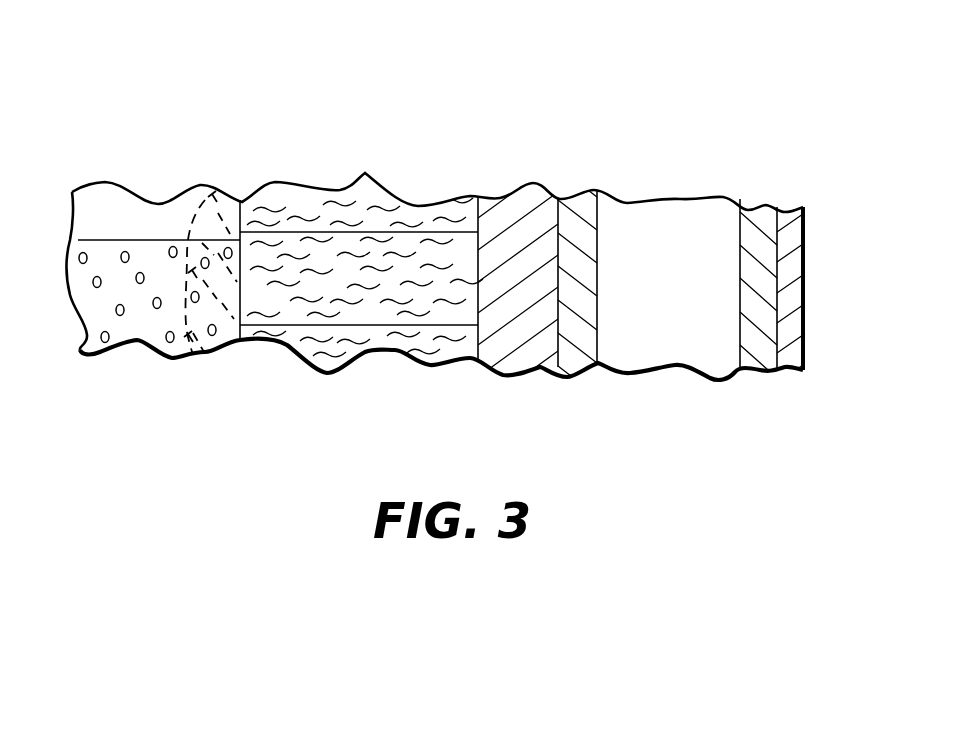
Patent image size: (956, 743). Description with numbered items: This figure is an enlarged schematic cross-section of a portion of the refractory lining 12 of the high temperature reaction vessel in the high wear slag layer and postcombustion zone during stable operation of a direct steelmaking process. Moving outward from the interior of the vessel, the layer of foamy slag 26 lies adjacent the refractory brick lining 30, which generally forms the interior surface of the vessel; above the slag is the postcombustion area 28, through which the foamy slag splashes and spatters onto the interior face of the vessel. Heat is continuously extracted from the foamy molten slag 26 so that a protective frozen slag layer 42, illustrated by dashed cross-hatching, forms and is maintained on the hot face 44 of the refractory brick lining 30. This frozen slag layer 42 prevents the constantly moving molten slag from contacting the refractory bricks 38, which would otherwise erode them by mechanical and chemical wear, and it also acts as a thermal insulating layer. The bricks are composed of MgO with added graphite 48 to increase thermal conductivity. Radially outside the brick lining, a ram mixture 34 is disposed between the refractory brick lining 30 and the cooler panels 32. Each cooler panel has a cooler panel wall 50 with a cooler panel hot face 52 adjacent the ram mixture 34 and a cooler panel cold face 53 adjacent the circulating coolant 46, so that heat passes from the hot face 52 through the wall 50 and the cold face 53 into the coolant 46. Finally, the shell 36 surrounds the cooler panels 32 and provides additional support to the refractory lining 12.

The refractory lining 12 is at (563, 128).
The foamy slag 26 is at (140, 317).
The postcombustion area 28 is at (115, 222).
The refractory brick lining 30 is at (283, 190).
The cooler panels 32 is at (752, 340).
The ram mixture 34 is at (528, 335).
The shell 36 is at (787, 265).
The refractory bricks 38 is at (373, 313).
The frozen slag layer 42 is at (230, 315).
The hot face 44 is at (237, 218).
The coolant 46 is at (700, 225).
The graphite 48 is at (417, 222).
The cooler panel wall 50 is at (583, 217).
The cooler panel hot face 52 is at (557, 222).
The cooler panel cold face 53 is at (602, 323).